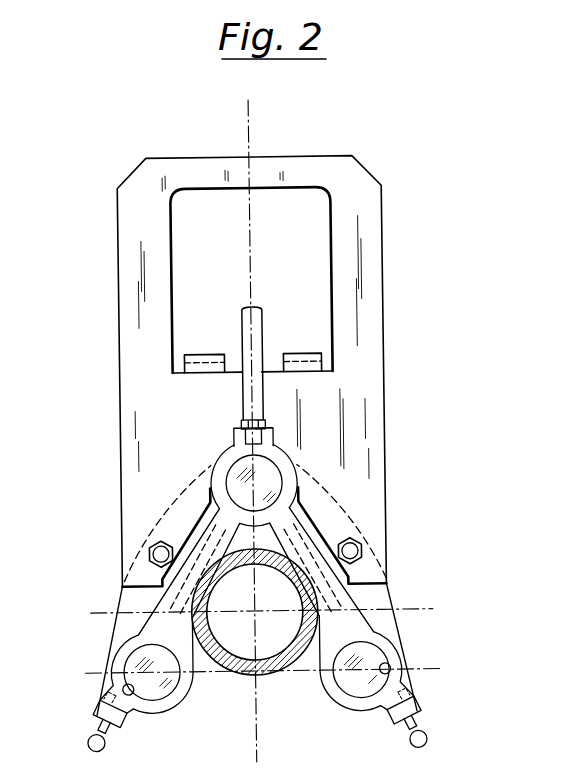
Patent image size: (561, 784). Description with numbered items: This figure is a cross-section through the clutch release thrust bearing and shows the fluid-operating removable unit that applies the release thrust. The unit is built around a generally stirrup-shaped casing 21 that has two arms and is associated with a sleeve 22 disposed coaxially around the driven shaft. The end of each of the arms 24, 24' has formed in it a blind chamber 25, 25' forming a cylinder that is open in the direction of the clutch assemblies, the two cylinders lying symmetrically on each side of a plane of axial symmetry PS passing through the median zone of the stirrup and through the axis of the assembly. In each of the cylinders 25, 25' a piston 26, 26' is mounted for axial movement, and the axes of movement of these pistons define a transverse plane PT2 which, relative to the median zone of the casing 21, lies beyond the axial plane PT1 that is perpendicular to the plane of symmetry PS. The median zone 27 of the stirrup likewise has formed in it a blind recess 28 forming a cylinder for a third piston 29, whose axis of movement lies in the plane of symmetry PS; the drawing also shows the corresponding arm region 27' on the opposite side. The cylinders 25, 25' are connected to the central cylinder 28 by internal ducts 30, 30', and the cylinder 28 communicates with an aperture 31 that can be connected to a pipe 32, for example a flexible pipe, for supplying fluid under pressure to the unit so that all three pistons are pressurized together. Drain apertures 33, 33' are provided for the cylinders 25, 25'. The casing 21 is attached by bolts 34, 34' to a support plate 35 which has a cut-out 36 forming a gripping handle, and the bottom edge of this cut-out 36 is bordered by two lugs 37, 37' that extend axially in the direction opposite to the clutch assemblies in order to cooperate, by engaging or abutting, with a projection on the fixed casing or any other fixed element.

The casing 21 is at (306, 525).
The sleeve 22 is at (275, 675).
The arm 24 is at (158, 688).
The arm 24' is at (367, 687).
The blind chamber 25 is at (87, 693).
The blind chamber 25' is at (416, 653).
The piston 26 is at (111, 663).
The piston 26' is at (388, 653).
The median zone 27 is at (191, 558).
The arm 27' is at (321, 570).
The blind recess 28 is at (270, 466).
The third piston 29 is at (230, 482).
The internal duct 30 is at (143, 527).
The internal duct 30' is at (366, 521).
The aperture 31 is at (267, 418).
The pipe 32 is at (262, 328).
The drain aperture 33 is at (86, 724).
The drain aperture 33' is at (434, 717).
The bolt 34 is at (124, 531).
The bolt 34' is at (386, 528).
The support plate 35 is at (119, 372).
The cut-out 36 is at (322, 252).
The lug 37 is at (204, 338).
The lug 37' is at (306, 337).
The plane of axial symmetry PS is at (252, 133).
The axial plane PT1 is at (425, 608).
The transverse plane PT2 is at (435, 670).